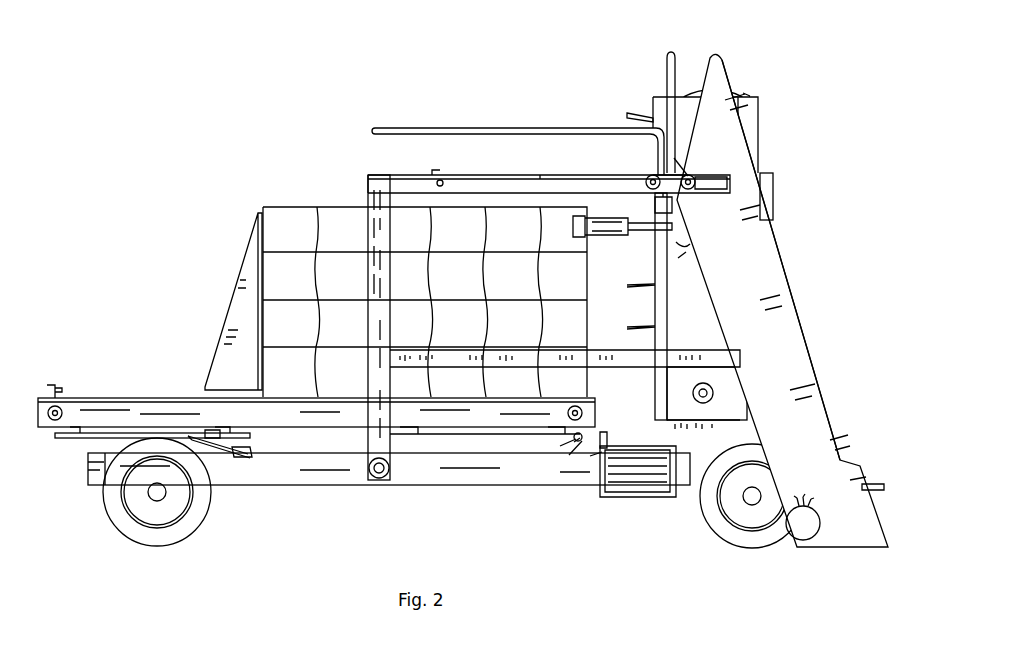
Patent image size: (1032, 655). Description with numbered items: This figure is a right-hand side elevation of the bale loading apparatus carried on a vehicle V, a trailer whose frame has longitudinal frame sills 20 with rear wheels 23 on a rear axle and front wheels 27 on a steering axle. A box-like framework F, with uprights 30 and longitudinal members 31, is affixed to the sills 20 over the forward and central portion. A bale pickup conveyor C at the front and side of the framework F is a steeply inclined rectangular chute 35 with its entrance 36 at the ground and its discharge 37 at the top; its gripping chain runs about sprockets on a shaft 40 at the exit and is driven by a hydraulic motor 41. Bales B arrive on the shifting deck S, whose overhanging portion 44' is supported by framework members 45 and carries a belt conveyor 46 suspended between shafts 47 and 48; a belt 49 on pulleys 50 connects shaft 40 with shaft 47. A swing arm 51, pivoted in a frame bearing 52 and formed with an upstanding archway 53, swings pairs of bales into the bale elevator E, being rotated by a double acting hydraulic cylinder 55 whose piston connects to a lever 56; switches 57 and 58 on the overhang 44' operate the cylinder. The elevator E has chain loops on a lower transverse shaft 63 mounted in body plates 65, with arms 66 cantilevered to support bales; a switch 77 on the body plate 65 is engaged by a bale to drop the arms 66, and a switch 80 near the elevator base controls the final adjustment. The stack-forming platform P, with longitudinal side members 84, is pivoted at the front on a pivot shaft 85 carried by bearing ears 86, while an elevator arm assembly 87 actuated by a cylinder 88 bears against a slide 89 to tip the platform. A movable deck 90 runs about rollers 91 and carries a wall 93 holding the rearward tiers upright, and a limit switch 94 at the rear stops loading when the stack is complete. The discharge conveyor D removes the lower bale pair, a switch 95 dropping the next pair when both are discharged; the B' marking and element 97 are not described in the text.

The longitudinal frame sills 20 is at (478, 478).
The rear wheels 23 is at (198, 505).
The front wheels 27 is at (714, 516).
The uprights 30 is at (374, 266).
The longitudinal members 31 is at (473, 205).
The rectangular chute 35 is at (806, 350).
The entrance 36 is at (870, 512).
The discharge 37 is at (700, 74).
The shaft 40 is at (702, 180).
The hydraulic motor 41 is at (820, 524).
The overhanging portion 44' is at (425, 160).
The framework members 45 is at (500, 176).
The belt conveyor 46 is at (554, 174).
The shaft 47 is at (650, 177).
The shaft 48 is at (443, 180).
The belt 49 is at (690, 178).
The pulleys 50 is at (645, 188).
The swing arm 51 is at (500, 128).
The frame bearing 52 is at (655, 205).
The upstanding archway 53 is at (665, 60).
The double acting hydraulic cylinder 55 is at (606, 238).
The lever 56 is at (690, 242).
The switch 57 is at (677, 172).
The switch 58 is at (386, 172).
The lower transverse shaft 63 is at (713, 392).
The body plates 65 is at (700, 281).
The arms 66 is at (636, 326).
The switch 77 is at (642, 154).
The switch 80 is at (648, 366).
The longitudinal side members 84 is at (352, 428).
The pivot shaft 85 is at (572, 437).
The structural bearing ears 86 is at (579, 451).
The elevator arm assembly 87 is at (190, 436).
The cylinder 88 is at (252, 450).
The slide 89 is at (210, 434).
The movable deck 90 is at (146, 396).
The rollers 91 is at (62, 413).
The wall 93 is at (250, 263).
The limit switch 94 is at (48, 385).
The switch 95 is at (605, 440).
The winch drum 97 is at (645, 482).
The bales B is at (425, 302).
The bale top B' is at (287, 191).
The bale pickup conveyor C is at (806, 287).
The discharge conveyor D is at (590, 501).
The bale elevator E is at (702, 258).
The box-like framework F is at (356, 195).
The stack-forming platform P is at (172, 389).
The shifting deck S is at (549, 110).
The vehicle V is at (310, 494).